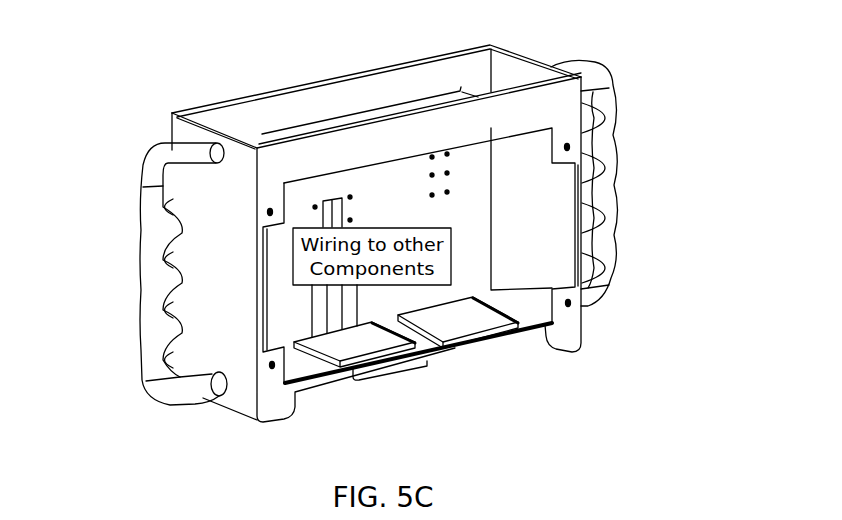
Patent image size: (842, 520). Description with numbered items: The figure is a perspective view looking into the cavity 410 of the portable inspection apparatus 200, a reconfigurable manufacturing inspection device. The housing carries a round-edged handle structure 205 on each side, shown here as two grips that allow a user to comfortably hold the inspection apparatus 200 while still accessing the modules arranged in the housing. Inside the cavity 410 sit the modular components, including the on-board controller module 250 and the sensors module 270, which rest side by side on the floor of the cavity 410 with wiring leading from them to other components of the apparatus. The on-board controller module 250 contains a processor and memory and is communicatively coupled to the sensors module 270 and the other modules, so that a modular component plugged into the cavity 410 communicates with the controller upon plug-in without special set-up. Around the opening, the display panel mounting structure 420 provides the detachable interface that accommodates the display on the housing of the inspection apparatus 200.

The portable inspection apparatus 200 is at (721, 38).
The handle structure 205 is at (152, 332).
The on-board controller module 250 is at (354, 344).
The sensors module 270 is at (458, 322).
The cavity 410 is at (569, 388).
The display panel mounting structure 420 is at (571, 152).